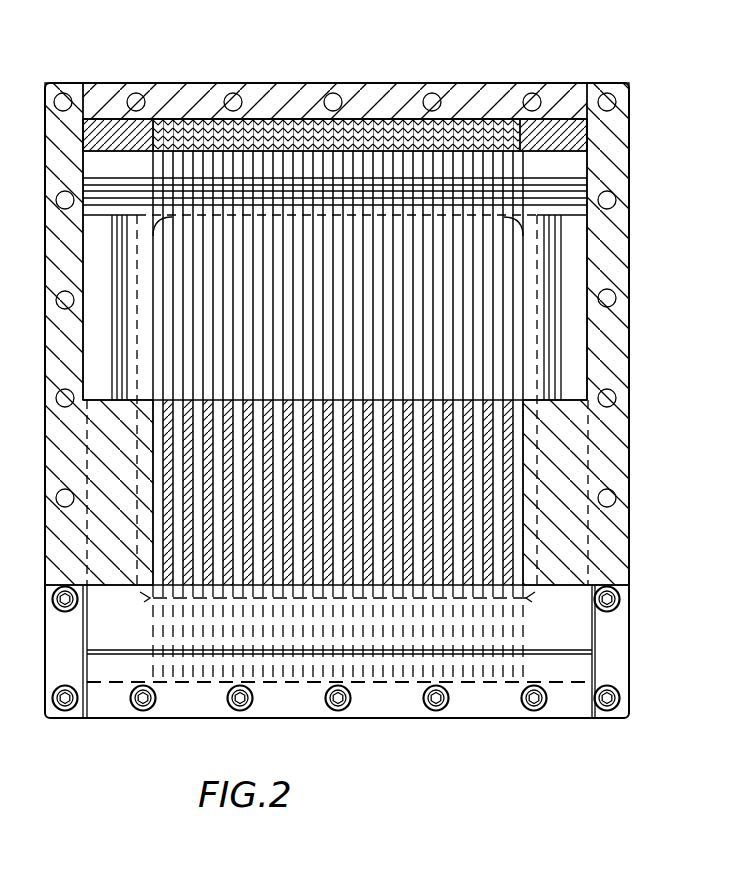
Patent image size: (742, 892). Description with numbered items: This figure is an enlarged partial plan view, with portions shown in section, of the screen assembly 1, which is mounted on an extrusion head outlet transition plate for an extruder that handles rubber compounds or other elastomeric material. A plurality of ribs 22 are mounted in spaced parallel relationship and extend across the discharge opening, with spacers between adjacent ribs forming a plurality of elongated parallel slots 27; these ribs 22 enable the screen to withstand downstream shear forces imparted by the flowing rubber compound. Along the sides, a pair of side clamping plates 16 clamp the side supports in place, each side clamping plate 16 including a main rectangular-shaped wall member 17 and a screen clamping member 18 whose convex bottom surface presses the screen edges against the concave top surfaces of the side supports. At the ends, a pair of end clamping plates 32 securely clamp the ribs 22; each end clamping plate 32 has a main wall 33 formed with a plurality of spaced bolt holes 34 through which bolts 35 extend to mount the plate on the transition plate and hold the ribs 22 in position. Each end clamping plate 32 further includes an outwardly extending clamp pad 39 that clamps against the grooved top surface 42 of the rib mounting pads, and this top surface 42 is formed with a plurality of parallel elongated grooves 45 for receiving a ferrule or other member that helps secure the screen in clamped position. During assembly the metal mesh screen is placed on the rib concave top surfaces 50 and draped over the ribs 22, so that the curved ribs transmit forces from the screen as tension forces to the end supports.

The screen assembly 1 is at (644, 322).
The side clamping plate 16 is at (637, 490).
The main rectangular-shaped wall member 17 is at (632, 436).
The screen clamping member 18 is at (112, 452).
The rib 22 is at (506, 326).
The elongated parallel slot 27 is at (178, 362).
The end clamping plate 32 is at (369, 80).
The main wall 33 is at (112, 130).
The bolt hole 34 is at (236, 96).
The bolt 35 is at (143, 704).
The clamp pad 39 is at (564, 626).
The grooved top surface 42 is at (557, 158).
The parallel elongated groove 45 is at (578, 190).
The rib concave top surface 50 is at (165, 283).